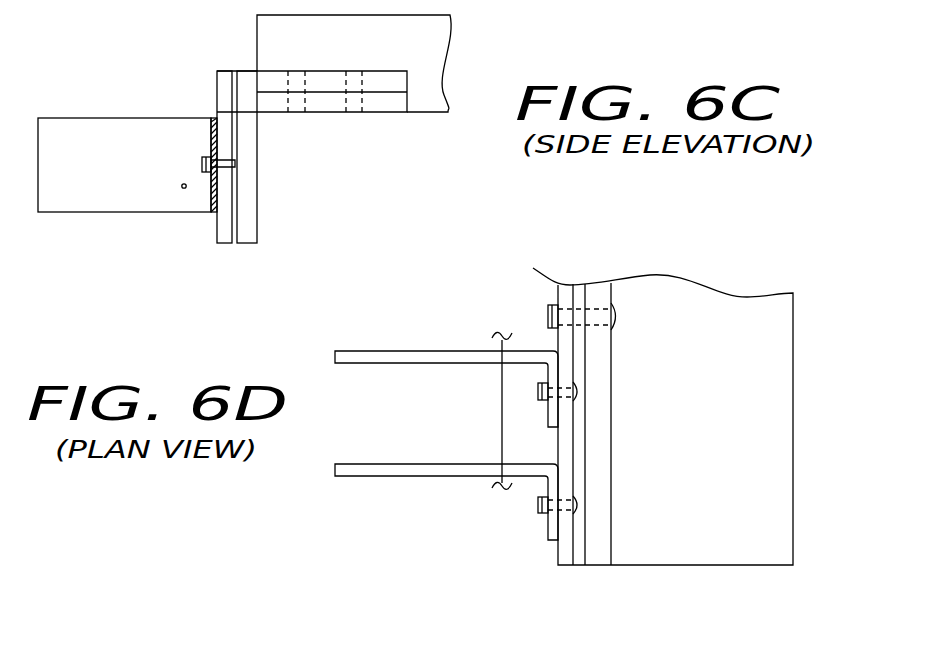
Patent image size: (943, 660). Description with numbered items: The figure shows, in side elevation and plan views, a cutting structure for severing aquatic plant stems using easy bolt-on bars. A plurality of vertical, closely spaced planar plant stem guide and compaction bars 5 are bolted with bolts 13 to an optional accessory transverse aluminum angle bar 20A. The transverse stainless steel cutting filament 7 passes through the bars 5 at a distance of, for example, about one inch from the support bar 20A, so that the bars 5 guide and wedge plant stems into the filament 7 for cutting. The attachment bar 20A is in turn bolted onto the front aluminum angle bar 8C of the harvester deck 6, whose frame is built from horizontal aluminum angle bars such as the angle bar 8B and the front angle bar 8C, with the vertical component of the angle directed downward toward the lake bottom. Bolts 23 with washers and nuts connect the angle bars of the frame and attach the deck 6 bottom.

In FIG. 6C, the vertical plant stem guide and compaction bar 5 is at (90, 143).
In FIG. 6D, the vertical plant stem guide and compaction bar 5 is at (427, 355).
In FIG. 6D, the harvester deck 6 is at (747, 397).
In FIG. 6C, the transverse stainless steel cutting filament 7 is at (184, 189).
In FIG. 6D, the transverse stainless steel cutting filament 7 is at (502, 433).
In FIG. 6C, the horizontal aluminum angle bar 8B is at (440, 29).
In FIG. 6C, the front aluminum angle bar 8C is at (247, 181).
In FIG. 6C, the bolt 13 is at (202, 165).
In FIG. 6D, the bolt 13 is at (538, 393).
In FIG. 6C, the accessory transverse aluminum angle bar 20A is at (227, 98).
In FIG. 6D, the bolt 23 is at (618, 312).